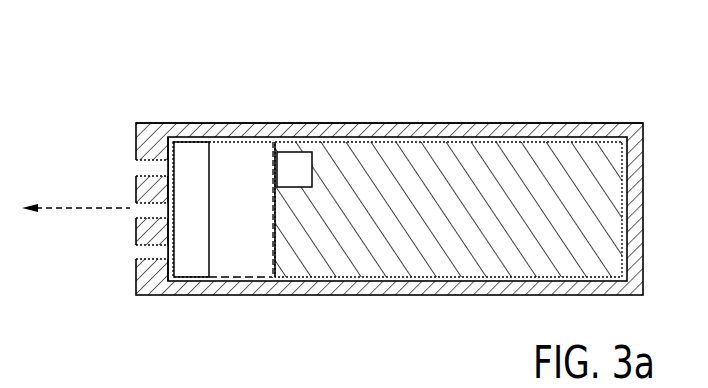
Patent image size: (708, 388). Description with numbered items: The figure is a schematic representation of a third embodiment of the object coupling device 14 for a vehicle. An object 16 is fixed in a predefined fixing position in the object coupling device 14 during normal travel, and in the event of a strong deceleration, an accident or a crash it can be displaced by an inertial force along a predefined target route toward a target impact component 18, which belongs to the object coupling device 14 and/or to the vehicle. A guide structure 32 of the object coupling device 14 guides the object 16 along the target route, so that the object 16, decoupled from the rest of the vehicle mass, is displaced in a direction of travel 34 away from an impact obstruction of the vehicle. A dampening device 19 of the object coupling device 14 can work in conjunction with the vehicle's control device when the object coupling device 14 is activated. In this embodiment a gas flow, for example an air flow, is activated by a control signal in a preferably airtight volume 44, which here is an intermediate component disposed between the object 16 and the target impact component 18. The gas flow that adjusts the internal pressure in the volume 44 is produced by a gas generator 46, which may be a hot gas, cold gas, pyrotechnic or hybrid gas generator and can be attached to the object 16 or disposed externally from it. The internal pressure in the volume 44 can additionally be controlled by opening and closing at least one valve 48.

The object coupling device 14 is at (640, 80).
The object 16 is at (392, 253).
The target impact component 18 is at (147, 235).
The dampening device 19 is at (195, 92).
The guide structure 32 is at (500, 130).
The direction of travel 34 is at (67, 208).
The volume 44 is at (235, 277).
The gas generator 46 is at (297, 162).
The valve 48 is at (147, 210).